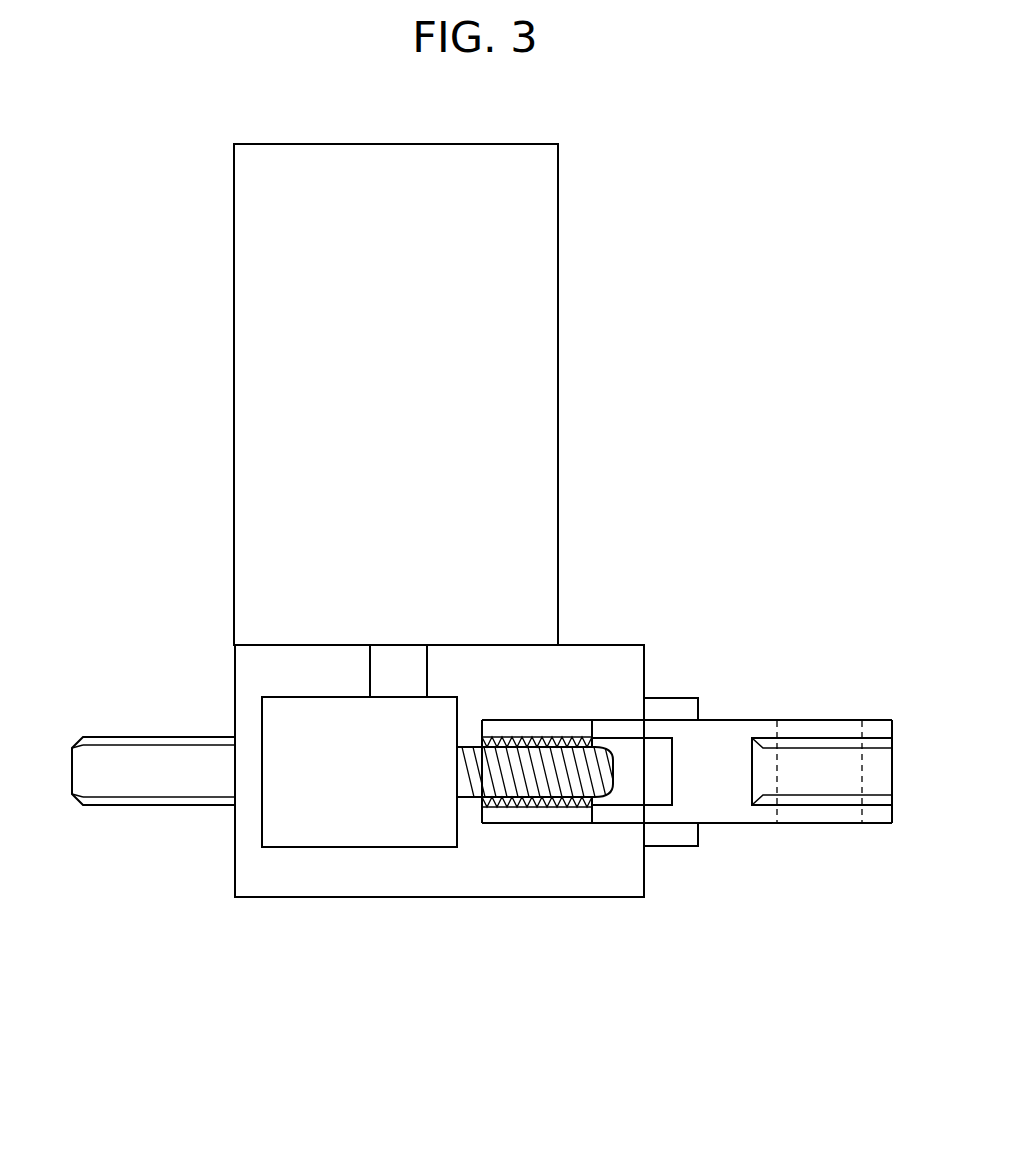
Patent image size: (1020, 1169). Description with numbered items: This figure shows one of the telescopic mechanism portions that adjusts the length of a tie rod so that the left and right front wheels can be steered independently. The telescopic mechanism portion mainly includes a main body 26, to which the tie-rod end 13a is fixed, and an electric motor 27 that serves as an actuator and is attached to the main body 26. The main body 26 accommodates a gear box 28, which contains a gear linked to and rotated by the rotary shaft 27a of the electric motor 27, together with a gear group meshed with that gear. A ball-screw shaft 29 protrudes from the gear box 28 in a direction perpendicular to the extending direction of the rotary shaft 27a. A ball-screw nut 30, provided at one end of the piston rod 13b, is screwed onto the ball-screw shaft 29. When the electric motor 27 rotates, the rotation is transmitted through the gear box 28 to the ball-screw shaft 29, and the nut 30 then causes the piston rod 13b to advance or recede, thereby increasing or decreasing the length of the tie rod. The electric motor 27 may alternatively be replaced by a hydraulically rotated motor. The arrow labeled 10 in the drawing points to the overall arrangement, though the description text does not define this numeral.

The drive unit 10 is at (734, 428).
The tie-rod end 13a is at (123, 735).
The piston rod 13b is at (733, 721).
The main body 26 is at (439, 934).
The electric motor 27 is at (558, 351).
The rotary shaft 27a is at (370, 677).
The gear box 28 is at (310, 847).
The ball-screw shaft 29 is at (465, 798).
The ball-screw nut 30 is at (535, 737).